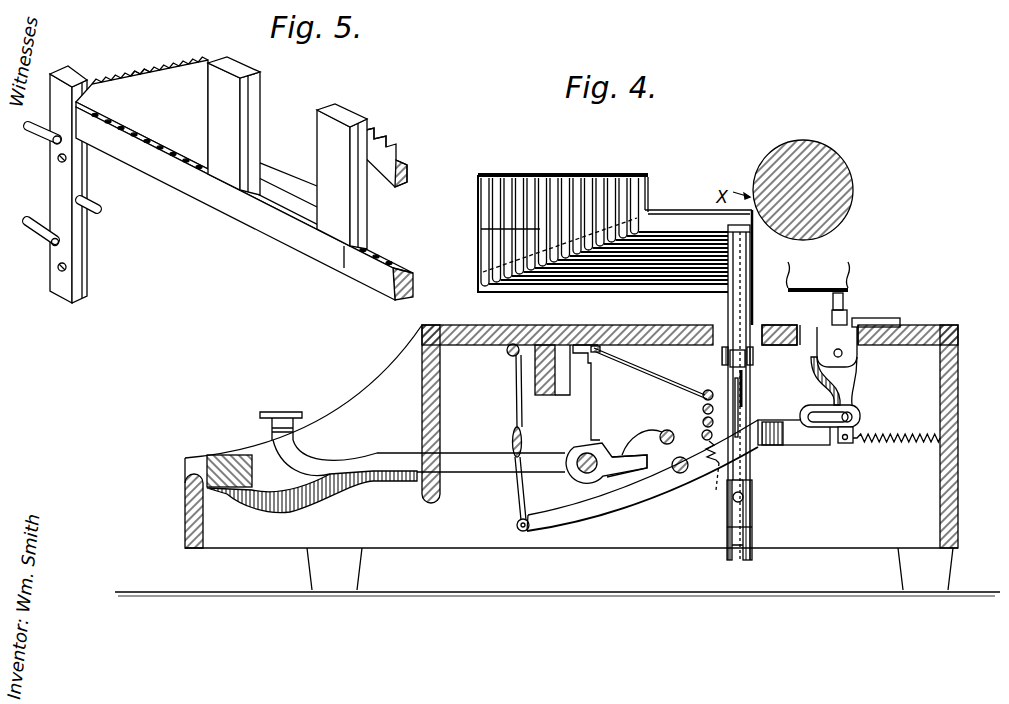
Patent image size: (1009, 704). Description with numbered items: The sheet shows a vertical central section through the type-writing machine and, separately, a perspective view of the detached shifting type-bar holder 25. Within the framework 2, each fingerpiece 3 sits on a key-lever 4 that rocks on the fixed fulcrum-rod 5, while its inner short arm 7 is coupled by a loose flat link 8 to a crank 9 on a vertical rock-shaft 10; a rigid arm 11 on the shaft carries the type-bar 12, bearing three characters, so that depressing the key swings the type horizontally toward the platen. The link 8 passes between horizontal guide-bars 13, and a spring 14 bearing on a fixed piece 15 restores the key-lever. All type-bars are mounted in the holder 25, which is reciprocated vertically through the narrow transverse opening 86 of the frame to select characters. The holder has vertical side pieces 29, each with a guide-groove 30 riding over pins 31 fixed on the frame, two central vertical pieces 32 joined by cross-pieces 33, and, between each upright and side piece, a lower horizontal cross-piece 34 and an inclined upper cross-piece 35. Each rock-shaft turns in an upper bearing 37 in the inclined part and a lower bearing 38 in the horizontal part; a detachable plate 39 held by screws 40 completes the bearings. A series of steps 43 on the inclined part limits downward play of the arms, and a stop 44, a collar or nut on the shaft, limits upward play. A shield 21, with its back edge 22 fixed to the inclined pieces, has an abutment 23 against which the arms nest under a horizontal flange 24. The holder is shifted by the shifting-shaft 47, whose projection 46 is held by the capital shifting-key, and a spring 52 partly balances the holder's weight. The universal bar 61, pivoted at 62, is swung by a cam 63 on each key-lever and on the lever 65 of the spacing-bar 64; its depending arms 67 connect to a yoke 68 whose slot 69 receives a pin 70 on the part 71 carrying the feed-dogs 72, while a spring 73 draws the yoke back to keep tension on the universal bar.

In FIG. 4, the framework 2 is at (467, 325).
In FIG. 4, the fingerpiece 3 is at (282, 411).
In FIG. 4, the key-lever 4 is at (363, 452).
In FIG. 4, the fulcrum-rod 5 is at (598, 447).
In FIG. 4, the short arm 7 is at (582, 388).
In FIG. 4, the link 8 is at (633, 366).
In FIG. 4, the crank 9 is at (744, 390).
In FIG. 4, the rock-shaft 10 is at (740, 278).
In FIG. 4, the rigid arm 11 is at (653, 237).
In FIG. 4, the type-bar 12 is at (509, 174).
In FIG. 4, the guide-bars 13 is at (702, 423).
In FIG. 4, the spring 14 is at (664, 429).
In FIG. 4, the fixed piece 15 is at (643, 470).
In FIG. 4, the shield 21 is at (687, 213).
In FIG. 4, the back edge 22 is at (753, 243).
In FIG. 4, the abutment 23 is at (647, 182).
In FIG. 4, the horizontal flange 24 is at (565, 172).
In FIG. 5, the holder 25 is at (230, 180).
In FIG. 4, the holder 25 is at (728, 313).
In FIG. 5, the side pieces 29 is at (78, 267).
In FIG. 4, the side pieces 29 is at (750, 470).
In FIG. 5, the guide-groove 30 is at (68, 72).
In FIG. 4, the guide-groove 30 is at (752, 527).
In FIG. 5, the pins 31 is at (42, 137).
In FIG. 4, the pins 31 is at (742, 497).
In FIG. 5, the vertical pieces 32 is at (253, 163).
In FIG. 5, the cross-pieces 33 is at (288, 212).
In FIG. 5, the lower cross-piece 34 is at (173, 168).
In FIG. 5, the upper cross-piece 35 is at (178, 87).
In FIG. 5, the upper bearing 37 is at (188, 63).
In FIG. 5, the lower bearing 38 is at (173, 142).
In FIG. 5, the plate 39 is at (88, 230).
In FIG. 5, the screws 40 is at (66, 159).
In FIG. 5, the steps 43 is at (147, 80).
In FIG. 4, the stop 44 is at (752, 367).
In FIG. 4, the projection 46 is at (833, 150).
In FIG. 4, the shifting-shaft 47 is at (681, 458).
In FIG. 4, the spring 52 is at (720, 482).
In FIG. 4, the universal bar 61 is at (515, 410).
In FIG. 4, the pivot 62 is at (507, 354).
In FIG. 4, the cam 63 is at (512, 435).
In FIG. 4, the spacing-bar 64 is at (216, 455).
In FIG. 4, the lever 65 is at (337, 497).
In FIG. 4, the depending arms 67 is at (515, 497).
In FIG. 4, the yoke 68 is at (643, 507).
In FIG. 4, the slot 69 is at (817, 407).
In FIG. 4, the pin 70 is at (853, 417).
In FIG. 4, the part 71 is at (852, 388).
In FIG. 4, the feed-dogs 72 is at (848, 316).
In FIG. 4, the spring 73 is at (896, 452).
In FIG. 4, the transverse opening 86 is at (760, 330).